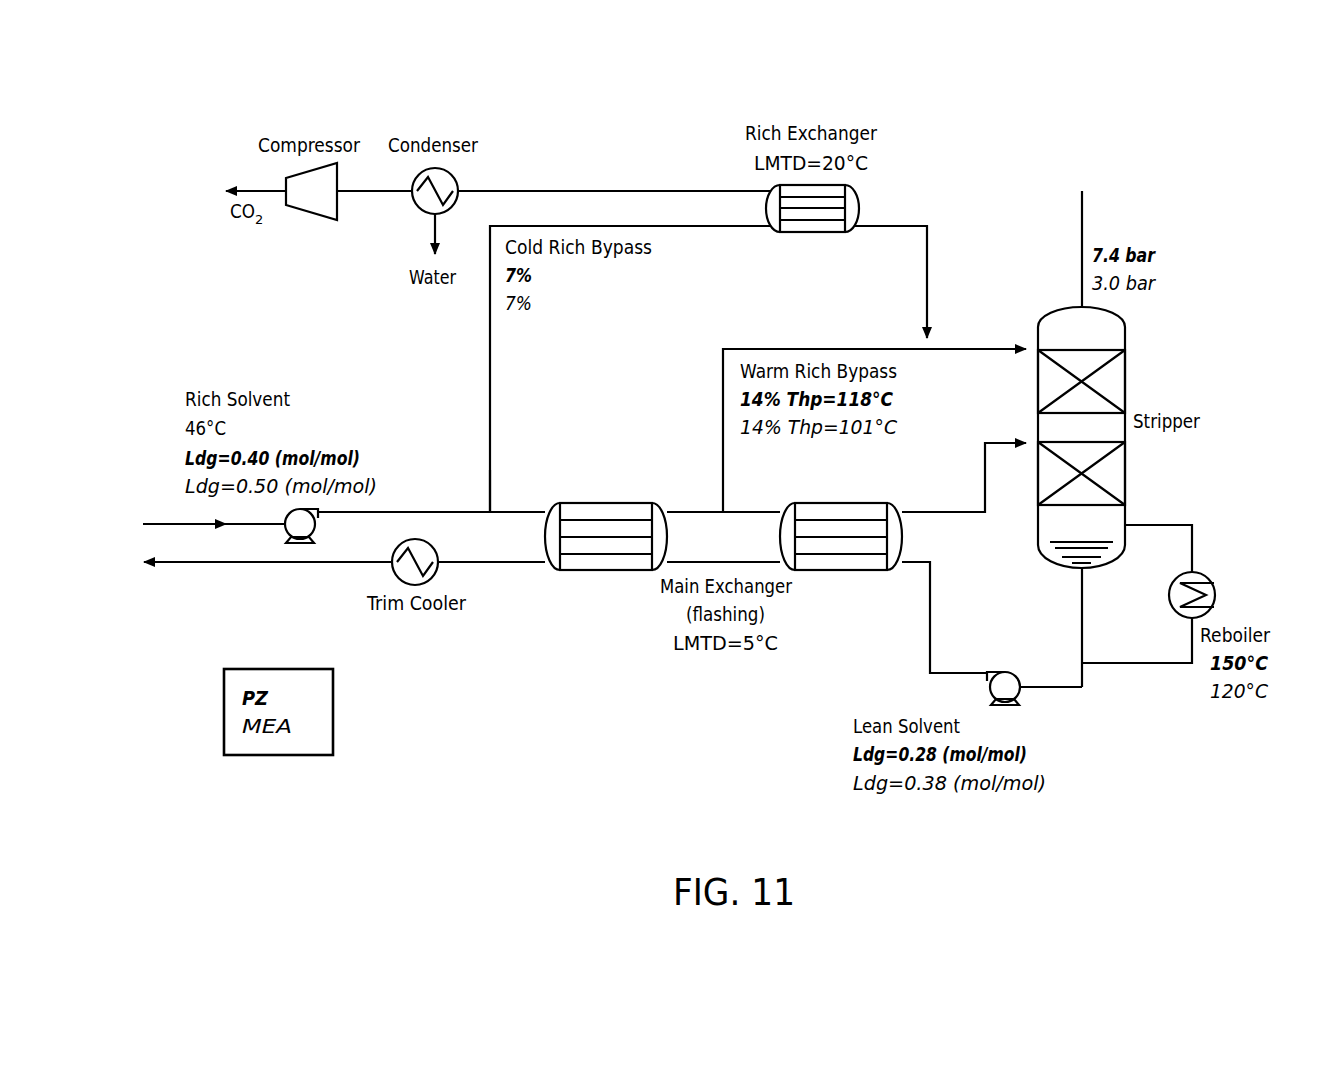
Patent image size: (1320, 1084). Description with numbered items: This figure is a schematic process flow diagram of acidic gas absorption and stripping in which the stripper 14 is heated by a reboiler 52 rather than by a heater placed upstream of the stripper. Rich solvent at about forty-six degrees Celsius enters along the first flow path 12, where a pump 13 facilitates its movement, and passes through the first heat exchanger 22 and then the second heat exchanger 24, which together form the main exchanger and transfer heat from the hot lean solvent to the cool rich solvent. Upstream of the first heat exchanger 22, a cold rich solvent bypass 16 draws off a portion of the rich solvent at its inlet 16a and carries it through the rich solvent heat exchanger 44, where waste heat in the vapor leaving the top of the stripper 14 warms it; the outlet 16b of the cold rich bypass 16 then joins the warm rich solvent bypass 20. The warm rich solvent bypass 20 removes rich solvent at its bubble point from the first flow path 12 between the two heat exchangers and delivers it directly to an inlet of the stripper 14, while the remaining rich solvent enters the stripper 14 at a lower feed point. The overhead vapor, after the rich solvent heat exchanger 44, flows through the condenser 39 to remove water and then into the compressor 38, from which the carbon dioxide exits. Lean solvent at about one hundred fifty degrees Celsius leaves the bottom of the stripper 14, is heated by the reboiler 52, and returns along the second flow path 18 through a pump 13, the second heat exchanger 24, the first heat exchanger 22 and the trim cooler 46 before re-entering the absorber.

The compressor 38 is at (286, 183).
The condenser 39 is at (456, 182).
The rich solvent heat exchanger 44 is at (812, 233).
The cold rich solvent bypass 16 is at (492, 380).
The inlet of the cold rich solvent bypass 16a is at (492, 510).
The outlet of the cold rich bypass 16b is at (930, 346).
The warm rich solvent bypass 20 is at (722, 399).
The stripper 14 is at (1123, 320).
The first heat exchanger 22 is at (604, 503).
The second heat exchanger 24 is at (843, 503).
The first flow path 12 is at (170, 522).
The second flow path 18 is at (270, 564).
The trim cooler 46 is at (437, 575).
The reboiler 52 is at (1188, 573).
The pump 13 is at (1018, 697).